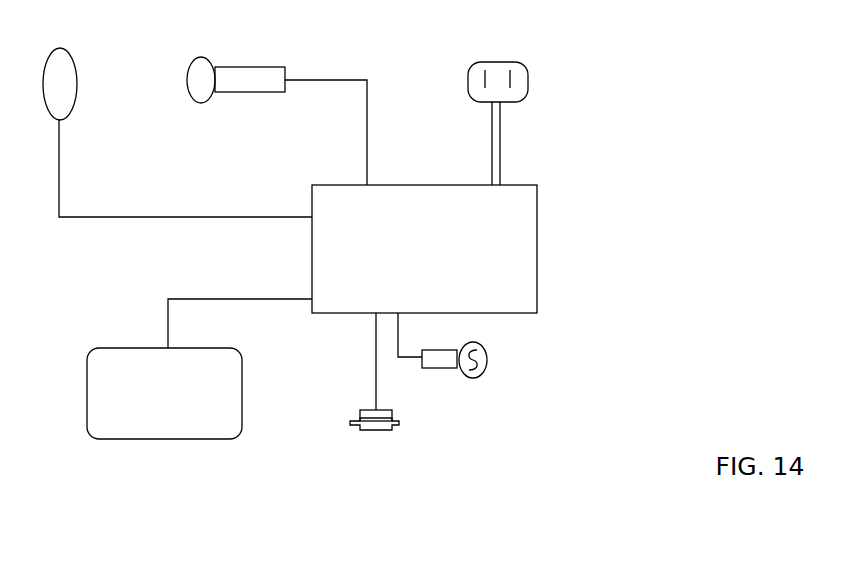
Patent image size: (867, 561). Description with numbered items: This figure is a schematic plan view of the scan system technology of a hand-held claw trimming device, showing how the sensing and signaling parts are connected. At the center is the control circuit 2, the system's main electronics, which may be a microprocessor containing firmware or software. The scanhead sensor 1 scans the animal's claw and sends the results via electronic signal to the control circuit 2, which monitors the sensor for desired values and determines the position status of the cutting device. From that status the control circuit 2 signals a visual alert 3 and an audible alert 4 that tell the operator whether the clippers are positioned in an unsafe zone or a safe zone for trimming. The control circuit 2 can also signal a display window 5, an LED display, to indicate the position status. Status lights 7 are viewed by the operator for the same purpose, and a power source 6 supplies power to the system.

The scanhead sensor 1 is at (277, 104).
The control circuit 2 is at (424, 249).
The visual alert 3 is at (458, 345).
The audible alert 4 is at (374, 390).
The display window 5 is at (199, 369).
The power source 6 is at (498, 106).
The status lights 7 is at (73, 113).